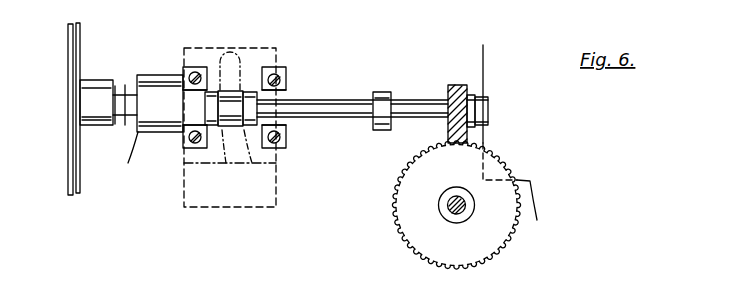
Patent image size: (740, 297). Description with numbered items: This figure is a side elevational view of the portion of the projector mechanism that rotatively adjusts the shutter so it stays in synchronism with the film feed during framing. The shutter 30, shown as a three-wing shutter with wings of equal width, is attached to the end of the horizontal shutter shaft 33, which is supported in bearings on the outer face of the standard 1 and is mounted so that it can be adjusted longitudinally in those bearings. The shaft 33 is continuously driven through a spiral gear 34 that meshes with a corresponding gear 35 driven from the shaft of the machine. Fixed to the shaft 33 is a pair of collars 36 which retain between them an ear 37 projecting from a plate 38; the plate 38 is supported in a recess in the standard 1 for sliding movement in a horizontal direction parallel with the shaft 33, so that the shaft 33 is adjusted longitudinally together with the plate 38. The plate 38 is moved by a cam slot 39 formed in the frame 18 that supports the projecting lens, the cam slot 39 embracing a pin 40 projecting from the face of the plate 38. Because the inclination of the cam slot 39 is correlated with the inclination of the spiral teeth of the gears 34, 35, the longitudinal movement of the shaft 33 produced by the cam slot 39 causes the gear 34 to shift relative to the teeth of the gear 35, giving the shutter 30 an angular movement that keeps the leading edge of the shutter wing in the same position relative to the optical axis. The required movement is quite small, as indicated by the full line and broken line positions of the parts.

The standard 1 is at (485, 75).
The frame 18 is at (278, 184).
The shutter 30 is at (76, 50).
The shutter shaft 33 is at (333, 100).
The spiral gear 34 is at (453, 85).
The gear 35 is at (496, 232).
The collars 36 is at (213, 85).
The ear 37 is at (232, 95).
The plate 38 is at (182, 136).
The cam slot 39 is at (240, 131).
The pin 40 is at (250, 147).